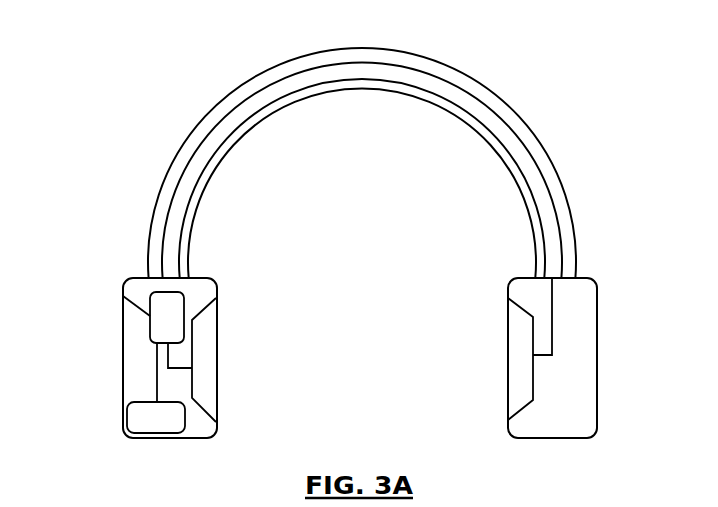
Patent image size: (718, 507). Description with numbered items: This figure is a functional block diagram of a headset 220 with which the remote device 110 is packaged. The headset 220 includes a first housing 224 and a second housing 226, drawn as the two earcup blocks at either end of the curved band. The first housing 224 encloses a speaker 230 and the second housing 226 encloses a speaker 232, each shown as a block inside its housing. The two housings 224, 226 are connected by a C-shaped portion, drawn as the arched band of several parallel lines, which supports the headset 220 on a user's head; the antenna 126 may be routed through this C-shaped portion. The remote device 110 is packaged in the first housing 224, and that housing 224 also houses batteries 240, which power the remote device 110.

The remote device 110 is at (123, 296).
The headset 220 is at (425, 57).
The antenna 126 is at (477, 98).
The first housing 224 is at (219, 357).
The second housing 226 is at (606, 349).
The speaker 230 is at (205, 413).
The speaker 232 is at (522, 407).
The batteries 240 is at (182, 433).